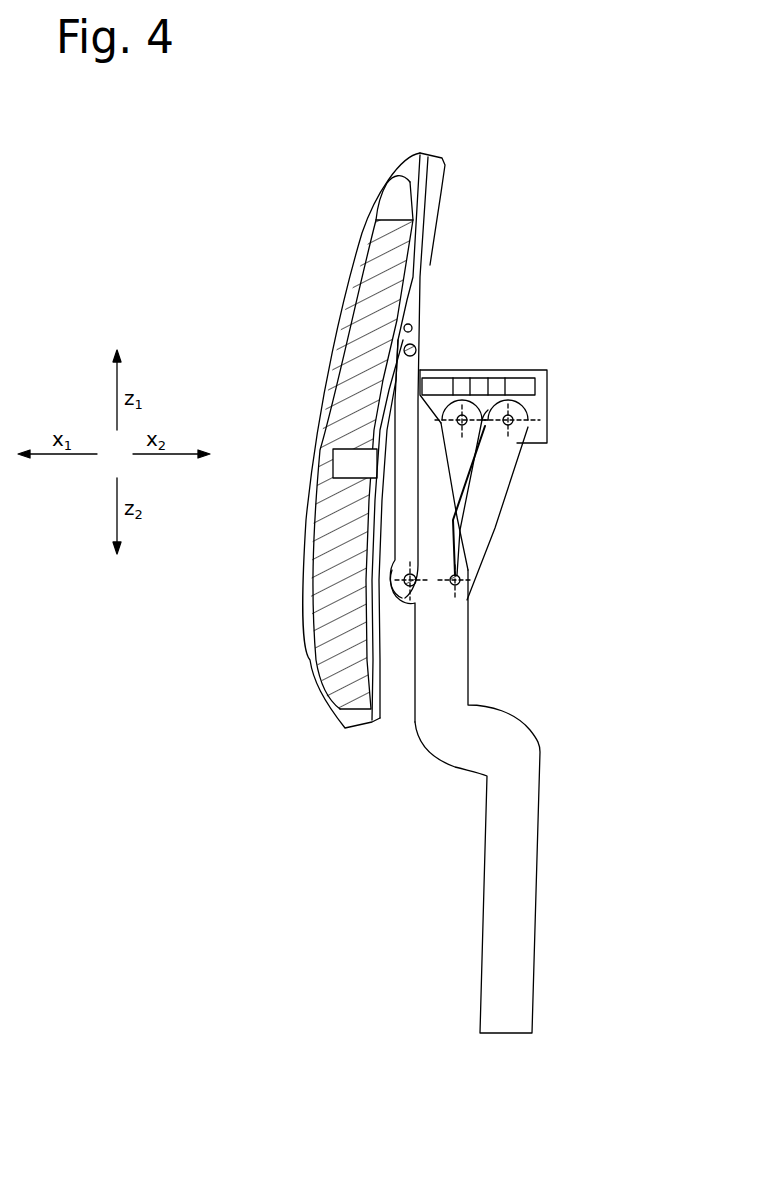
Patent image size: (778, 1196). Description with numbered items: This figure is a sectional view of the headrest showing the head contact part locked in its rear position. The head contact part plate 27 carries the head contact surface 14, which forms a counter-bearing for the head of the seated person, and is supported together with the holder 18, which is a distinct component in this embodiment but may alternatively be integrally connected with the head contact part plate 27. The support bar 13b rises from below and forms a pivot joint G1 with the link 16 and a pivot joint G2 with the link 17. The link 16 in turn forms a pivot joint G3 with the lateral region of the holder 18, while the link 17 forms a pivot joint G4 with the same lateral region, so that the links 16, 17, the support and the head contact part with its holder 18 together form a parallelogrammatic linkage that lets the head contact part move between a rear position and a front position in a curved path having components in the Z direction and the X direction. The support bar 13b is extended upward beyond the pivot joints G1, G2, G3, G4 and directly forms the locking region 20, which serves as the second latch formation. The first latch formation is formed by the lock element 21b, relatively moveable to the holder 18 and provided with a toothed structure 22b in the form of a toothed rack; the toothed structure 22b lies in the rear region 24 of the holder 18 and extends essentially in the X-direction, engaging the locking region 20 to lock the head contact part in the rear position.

The support bar 13b is at (513, 822).
The head contact surface 14 is at (325, 400).
The link 16 is at (458, 455).
The link 17 is at (480, 529).
The holder 18 is at (548, 410).
The locking region 20 is at (412, 370).
The lock element 21b is at (465, 378).
The toothed structure 22b is at (532, 385).
The rear region 24 is at (495, 368).
The head contact part plate 27 is at (433, 165).
The pivot joint G1 is at (414, 586).
The pivot joint G2 is at (460, 586).
The pivot joint G3 is at (512, 427).
The pivot joint G4 is at (550, 443).